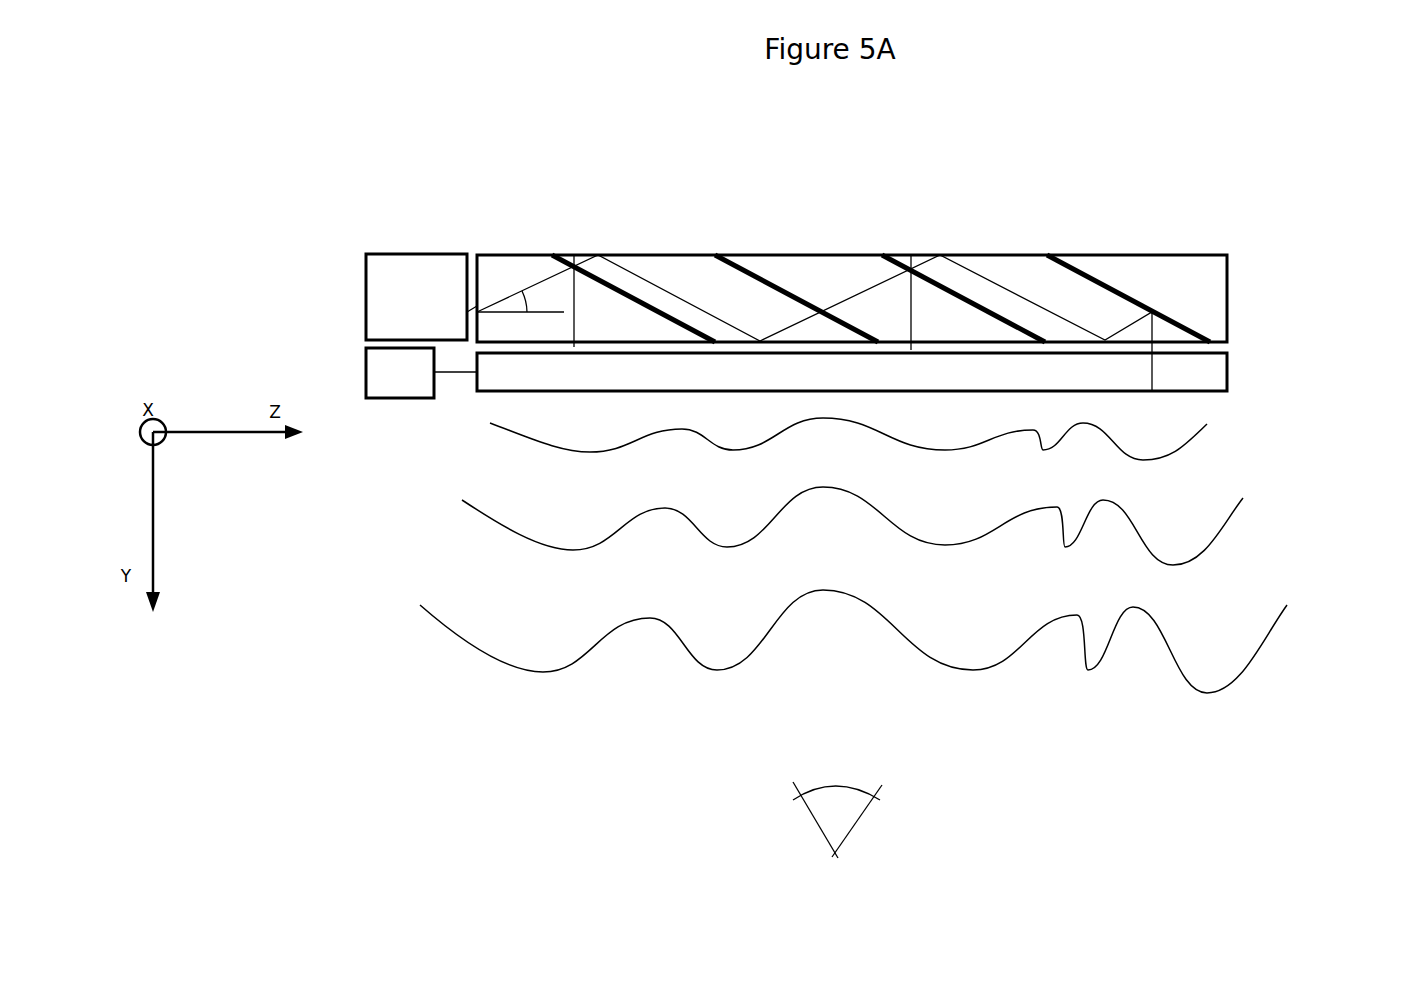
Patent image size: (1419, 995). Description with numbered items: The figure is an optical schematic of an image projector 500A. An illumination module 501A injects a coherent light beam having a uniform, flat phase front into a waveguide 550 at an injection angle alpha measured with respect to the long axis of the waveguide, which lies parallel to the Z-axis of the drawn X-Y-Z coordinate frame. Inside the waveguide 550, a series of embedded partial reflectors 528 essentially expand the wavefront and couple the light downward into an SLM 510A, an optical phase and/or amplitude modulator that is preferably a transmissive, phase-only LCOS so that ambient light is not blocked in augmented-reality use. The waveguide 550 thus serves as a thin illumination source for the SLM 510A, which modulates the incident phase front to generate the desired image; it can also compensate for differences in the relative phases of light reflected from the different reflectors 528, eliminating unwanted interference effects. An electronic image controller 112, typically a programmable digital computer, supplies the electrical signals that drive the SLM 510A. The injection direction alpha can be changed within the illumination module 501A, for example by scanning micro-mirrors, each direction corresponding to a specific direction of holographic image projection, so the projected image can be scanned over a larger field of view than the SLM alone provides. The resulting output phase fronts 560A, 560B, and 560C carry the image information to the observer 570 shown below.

The image projector 500A is at (509, 144).
The illumination module 501A is at (421, 297).
The electronic image controller 112 is at (421, 373).
The waveguide 550 is at (1192, 254).
The embedded partial reflectors 528 is at (1067, 272).
The SLM 510A is at (1230, 370).
The output phase front 560A is at (1187, 445).
The output phase front 560B is at (1210, 535).
The output phase front 560C is at (1247, 662).
The observer 570 is at (872, 812).